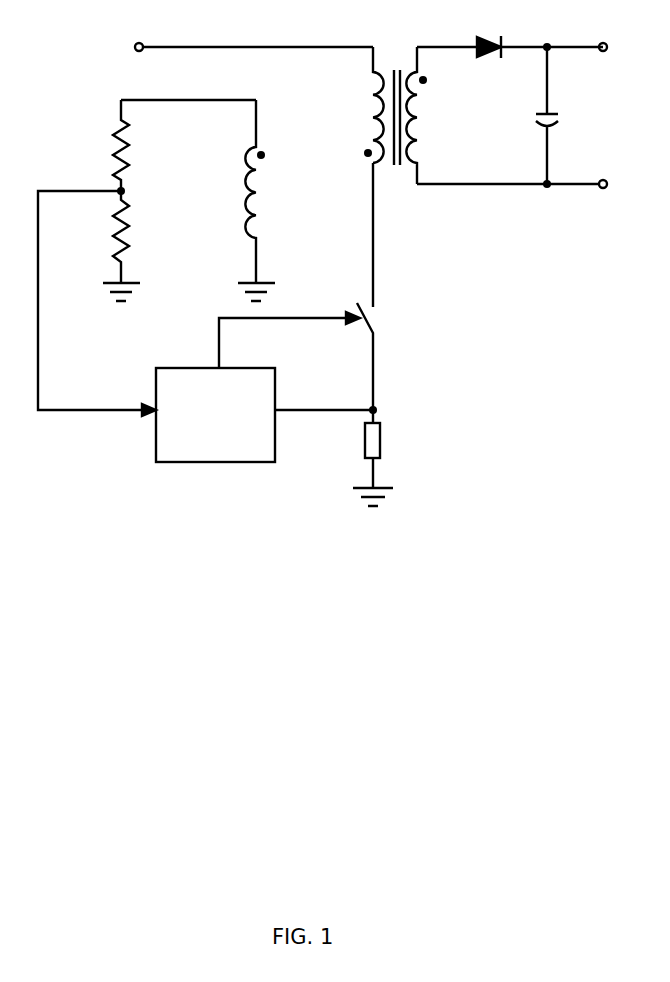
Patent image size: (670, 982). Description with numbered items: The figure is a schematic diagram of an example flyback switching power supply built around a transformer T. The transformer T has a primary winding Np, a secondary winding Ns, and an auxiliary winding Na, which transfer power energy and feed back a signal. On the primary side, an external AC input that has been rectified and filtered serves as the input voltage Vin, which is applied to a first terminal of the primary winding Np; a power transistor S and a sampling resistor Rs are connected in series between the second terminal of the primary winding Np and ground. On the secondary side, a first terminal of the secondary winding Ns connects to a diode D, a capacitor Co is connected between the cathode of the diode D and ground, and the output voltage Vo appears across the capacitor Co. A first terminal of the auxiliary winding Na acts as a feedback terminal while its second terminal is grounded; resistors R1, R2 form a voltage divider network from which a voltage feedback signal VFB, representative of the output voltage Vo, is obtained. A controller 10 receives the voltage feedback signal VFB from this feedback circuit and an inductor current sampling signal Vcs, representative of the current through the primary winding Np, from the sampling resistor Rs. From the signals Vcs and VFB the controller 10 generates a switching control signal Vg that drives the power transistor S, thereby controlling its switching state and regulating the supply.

The controller 10 is at (215, 415).
The input voltage Vin is at (245, 35).
The transformer T is at (396, 100).
The primary winding Np is at (359, 105).
The secondary winding Ns is at (441, 115).
The auxiliary winding Na is at (264, 200).
The diode D is at (540, 34).
The capacitor Co is at (529, 115).
The output voltage Vo is at (513, 115).
The resistor R1 is at (184, 145).
The resistor R2 is at (134, 244).
The voltage feedback signal VFB is at (97, 303).
The switching control signal Vg is at (289, 329).
The power transistor S is at (380, 286).
The inductor current sampling signal Vcs is at (326, 400).
The sampling resistor Rs is at (385, 458).